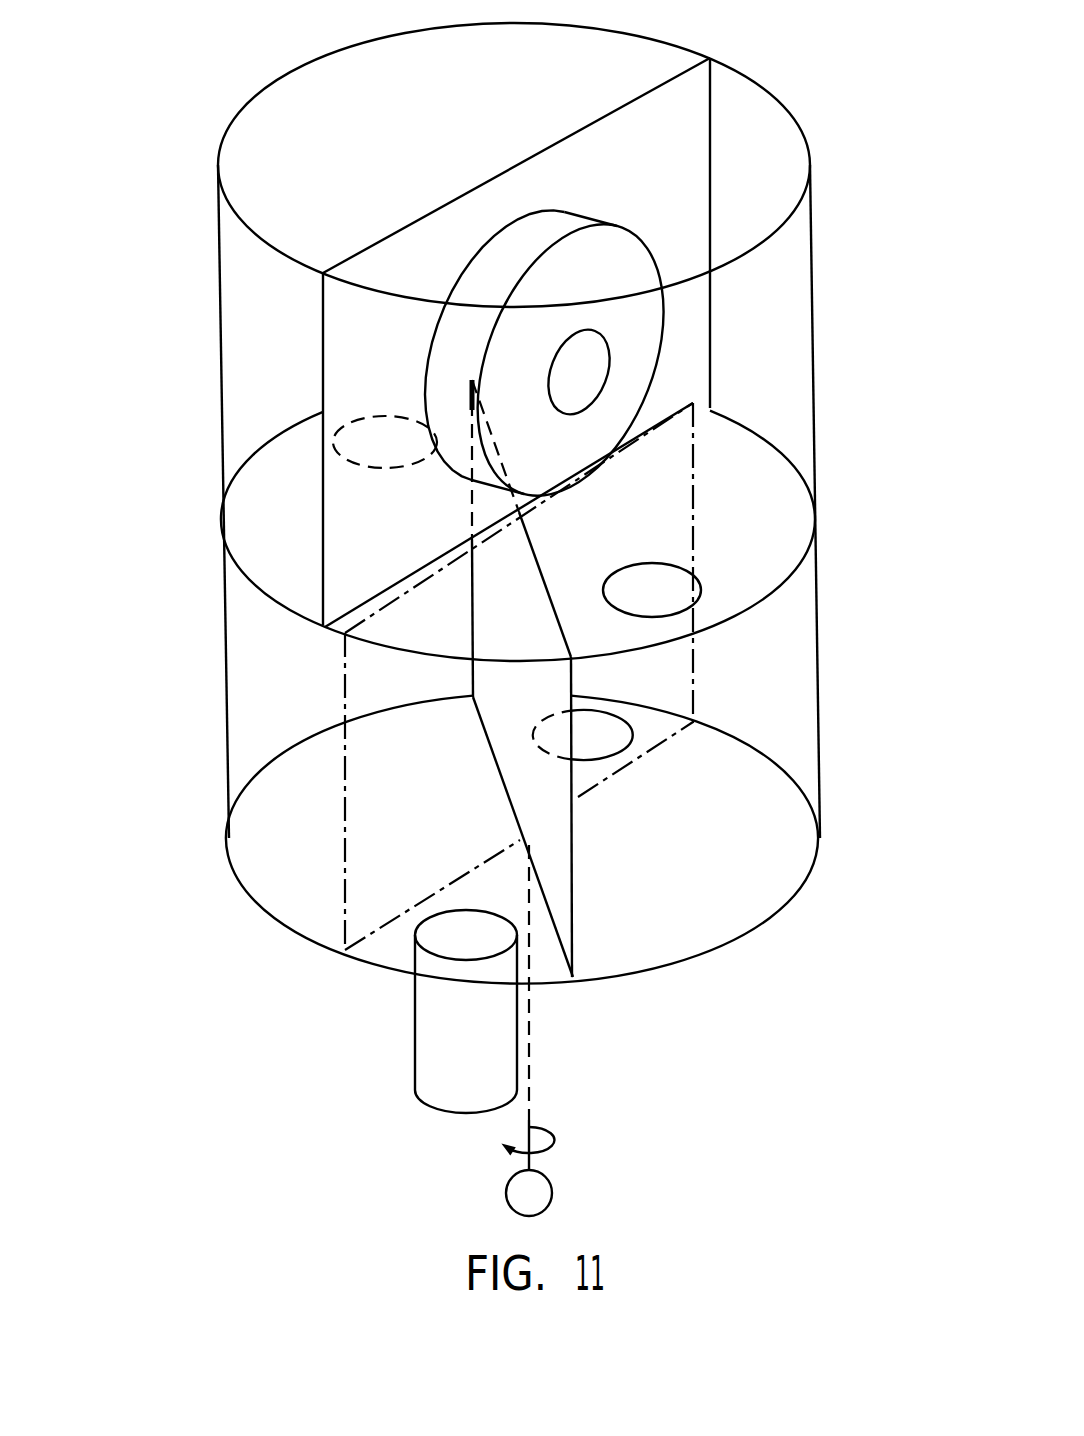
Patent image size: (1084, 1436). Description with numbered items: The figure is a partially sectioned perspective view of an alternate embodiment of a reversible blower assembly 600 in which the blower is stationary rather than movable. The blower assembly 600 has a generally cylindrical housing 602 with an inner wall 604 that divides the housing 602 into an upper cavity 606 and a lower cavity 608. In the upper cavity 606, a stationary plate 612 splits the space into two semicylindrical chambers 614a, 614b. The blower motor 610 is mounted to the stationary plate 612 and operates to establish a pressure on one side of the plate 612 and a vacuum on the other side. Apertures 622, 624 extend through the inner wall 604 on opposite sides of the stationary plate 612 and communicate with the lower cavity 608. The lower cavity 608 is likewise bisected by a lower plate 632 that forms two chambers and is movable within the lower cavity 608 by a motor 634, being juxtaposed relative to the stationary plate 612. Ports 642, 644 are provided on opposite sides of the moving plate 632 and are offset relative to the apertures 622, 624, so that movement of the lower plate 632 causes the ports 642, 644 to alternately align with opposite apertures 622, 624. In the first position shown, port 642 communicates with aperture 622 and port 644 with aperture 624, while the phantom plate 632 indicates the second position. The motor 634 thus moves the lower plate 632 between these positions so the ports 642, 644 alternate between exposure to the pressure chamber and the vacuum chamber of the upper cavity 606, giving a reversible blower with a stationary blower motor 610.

The blower assembly 600 is at (150, 453).
The housing 602 is at (218, 285).
The inner wall 604 is at (293, 100).
The upper cavity 606 is at (240, 340).
The lower cavity 608 is at (246, 711).
The blower motor 610 is at (602, 208).
The stationary plate 612 is at (570, 135).
The semicylindrical chamber 614a is at (263, 173).
The semicylindrical chamber 614b is at (782, 155).
The aperture 622 is at (362, 466).
The aperture 624 is at (707, 588).
The lower plate 632 is at (573, 860).
The motor 634 is at (553, 1190).
The port 642 is at (425, 952).
The port 644 is at (633, 723).